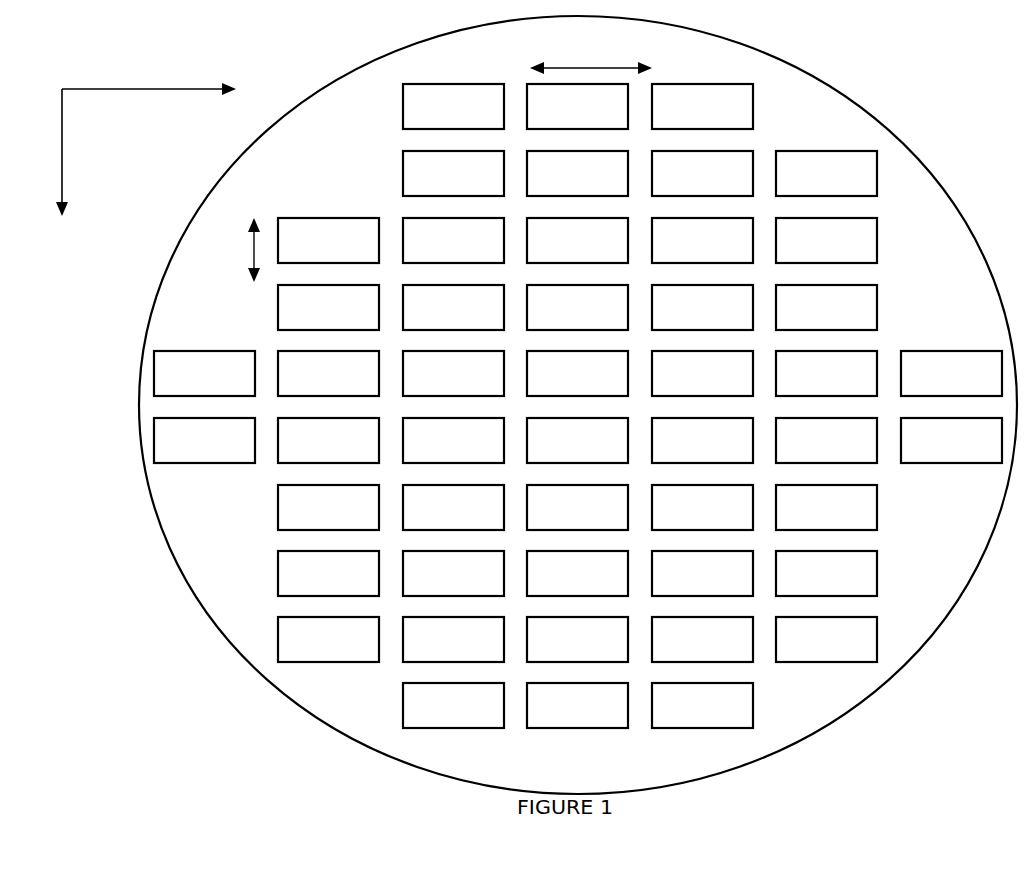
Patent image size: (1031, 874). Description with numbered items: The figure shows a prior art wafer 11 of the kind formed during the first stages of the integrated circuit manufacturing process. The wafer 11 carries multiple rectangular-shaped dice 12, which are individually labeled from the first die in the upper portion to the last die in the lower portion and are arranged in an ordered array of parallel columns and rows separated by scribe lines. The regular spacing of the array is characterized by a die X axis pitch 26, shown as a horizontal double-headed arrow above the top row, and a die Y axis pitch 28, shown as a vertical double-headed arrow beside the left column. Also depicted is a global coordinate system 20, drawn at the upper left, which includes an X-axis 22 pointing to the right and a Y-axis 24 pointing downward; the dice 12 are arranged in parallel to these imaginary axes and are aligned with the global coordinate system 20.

The wafer 11 is at (851, 101).
The dice 12 is at (578, 406).
The global coordinate system 20 is at (126, 146).
The X-axis 22 is at (149, 73).
The Y-axis 24 is at (61, 165).
The die X axis pitch 26 is at (591, 55).
The die Y axis pitch 28 is at (244, 250).